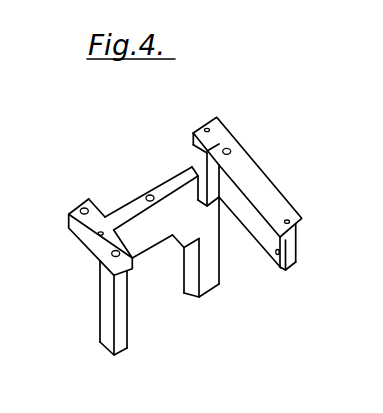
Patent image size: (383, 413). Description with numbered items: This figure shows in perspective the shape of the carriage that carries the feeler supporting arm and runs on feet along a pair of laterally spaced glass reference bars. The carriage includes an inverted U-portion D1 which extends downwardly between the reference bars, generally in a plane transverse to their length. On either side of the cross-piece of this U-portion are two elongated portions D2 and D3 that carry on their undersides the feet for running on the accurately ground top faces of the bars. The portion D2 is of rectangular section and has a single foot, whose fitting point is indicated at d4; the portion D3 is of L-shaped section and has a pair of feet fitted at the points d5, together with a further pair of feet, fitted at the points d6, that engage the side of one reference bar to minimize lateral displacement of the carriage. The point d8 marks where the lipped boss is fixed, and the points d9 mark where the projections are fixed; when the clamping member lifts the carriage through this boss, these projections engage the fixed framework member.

The inverted U-portion D1 is at (123, 337).
The elongated portion D2 is at (91, 199).
The elongated portion D3 is at (224, 138).
The fitting point of foot D4 d4 is at (98, 235).
The fitting points of feet D5 d5 is at (207, 128).
The fitting points of feet D6 d6 is at (196, 160).
The fixing point of boss D8 d8 is at (150, 194).
The fixing points of projections D9 d9 is at (82, 207).